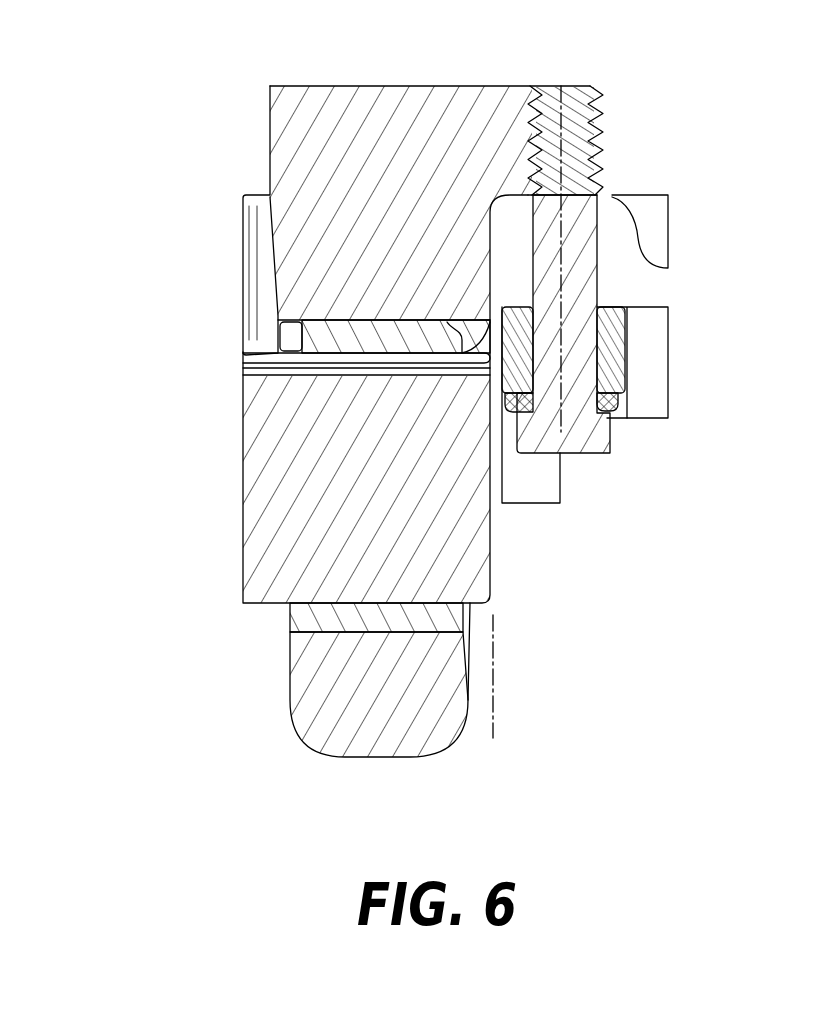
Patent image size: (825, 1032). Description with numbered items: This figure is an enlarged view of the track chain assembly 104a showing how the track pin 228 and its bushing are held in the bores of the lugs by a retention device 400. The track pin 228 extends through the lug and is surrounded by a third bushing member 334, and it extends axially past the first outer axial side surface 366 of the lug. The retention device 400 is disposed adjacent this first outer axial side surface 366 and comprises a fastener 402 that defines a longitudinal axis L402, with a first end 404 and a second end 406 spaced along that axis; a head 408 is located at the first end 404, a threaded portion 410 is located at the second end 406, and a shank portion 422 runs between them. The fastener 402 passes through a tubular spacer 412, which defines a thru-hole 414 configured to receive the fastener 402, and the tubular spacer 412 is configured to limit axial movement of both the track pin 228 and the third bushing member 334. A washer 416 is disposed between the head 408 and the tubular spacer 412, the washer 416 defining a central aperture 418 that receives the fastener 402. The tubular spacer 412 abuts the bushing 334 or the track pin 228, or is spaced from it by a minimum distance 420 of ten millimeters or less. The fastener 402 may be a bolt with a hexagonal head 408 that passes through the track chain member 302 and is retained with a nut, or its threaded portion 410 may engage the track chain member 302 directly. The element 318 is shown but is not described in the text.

The track chain assembly 104a is at (648, 86).
The track pin 228 is at (327, 491).
The track chain member 302 is at (686, 377).
The tab 318 is at (290, 338).
The third bushing member 334 is at (302, 620).
The first outer axial side surface 366 is at (468, 620).
The retention device 400 is at (611, 288).
The fastener 402 is at (598, 427).
The first end 404 is at (607, 460).
The second end 406 is at (560, 88).
The head 408 is at (638, 418).
The threaded portion 410 is at (527, 92).
The tubular spacer 412 is at (612, 380).
The thru-hole 414 is at (611, 349).
The washer 416 is at (522, 407).
The central aperture 418 is at (533, 370).
The minimum distance 420 is at (425, 503).
The shank portion 422 is at (588, 302).
The longitudinal axis L402 is at (563, 460).